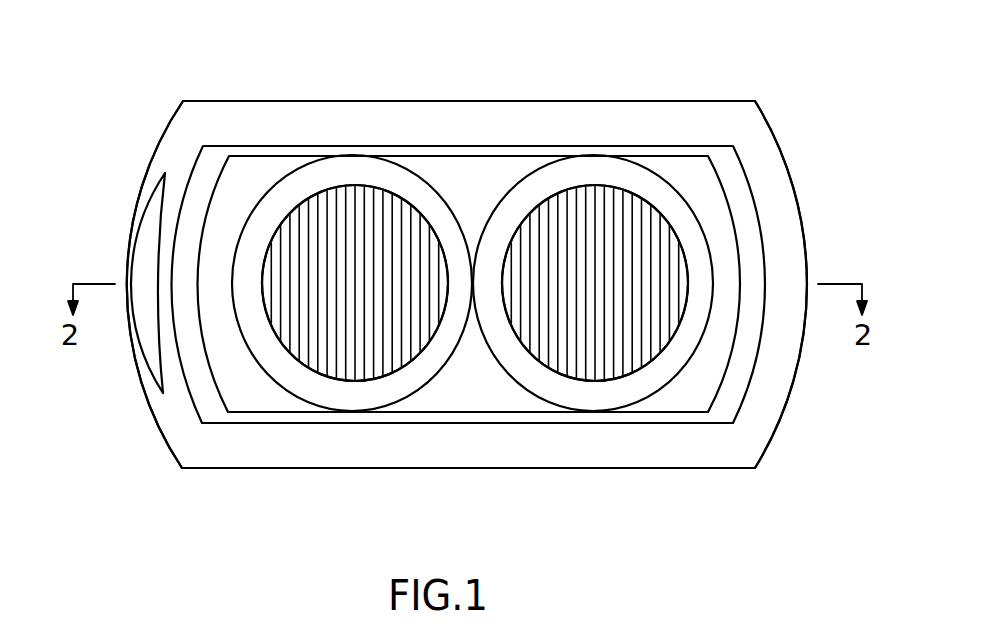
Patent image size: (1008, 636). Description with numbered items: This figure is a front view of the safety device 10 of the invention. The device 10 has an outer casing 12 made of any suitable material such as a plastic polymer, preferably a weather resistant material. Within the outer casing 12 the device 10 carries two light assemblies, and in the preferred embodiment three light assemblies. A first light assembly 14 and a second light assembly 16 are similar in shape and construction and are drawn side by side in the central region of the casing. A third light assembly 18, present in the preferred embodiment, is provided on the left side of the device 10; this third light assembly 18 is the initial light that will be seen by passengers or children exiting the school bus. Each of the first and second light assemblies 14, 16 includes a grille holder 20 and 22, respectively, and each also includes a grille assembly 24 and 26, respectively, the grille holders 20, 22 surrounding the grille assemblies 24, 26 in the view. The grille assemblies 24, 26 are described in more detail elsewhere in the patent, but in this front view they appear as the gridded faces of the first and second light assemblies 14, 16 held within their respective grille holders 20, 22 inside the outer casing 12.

The safety device 10 is at (647, 77).
The outer casing 12 is at (797, 180).
The first light assembly 14 is at (347, 360).
The second light assembly 16 is at (610, 360).
The third light assembly 18 is at (153, 353).
The grille holder 20 is at (420, 377).
The grille holder 22 is at (567, 395).
The grille assembly 24 is at (335, 190).
The grille assembly 26 is at (558, 198).